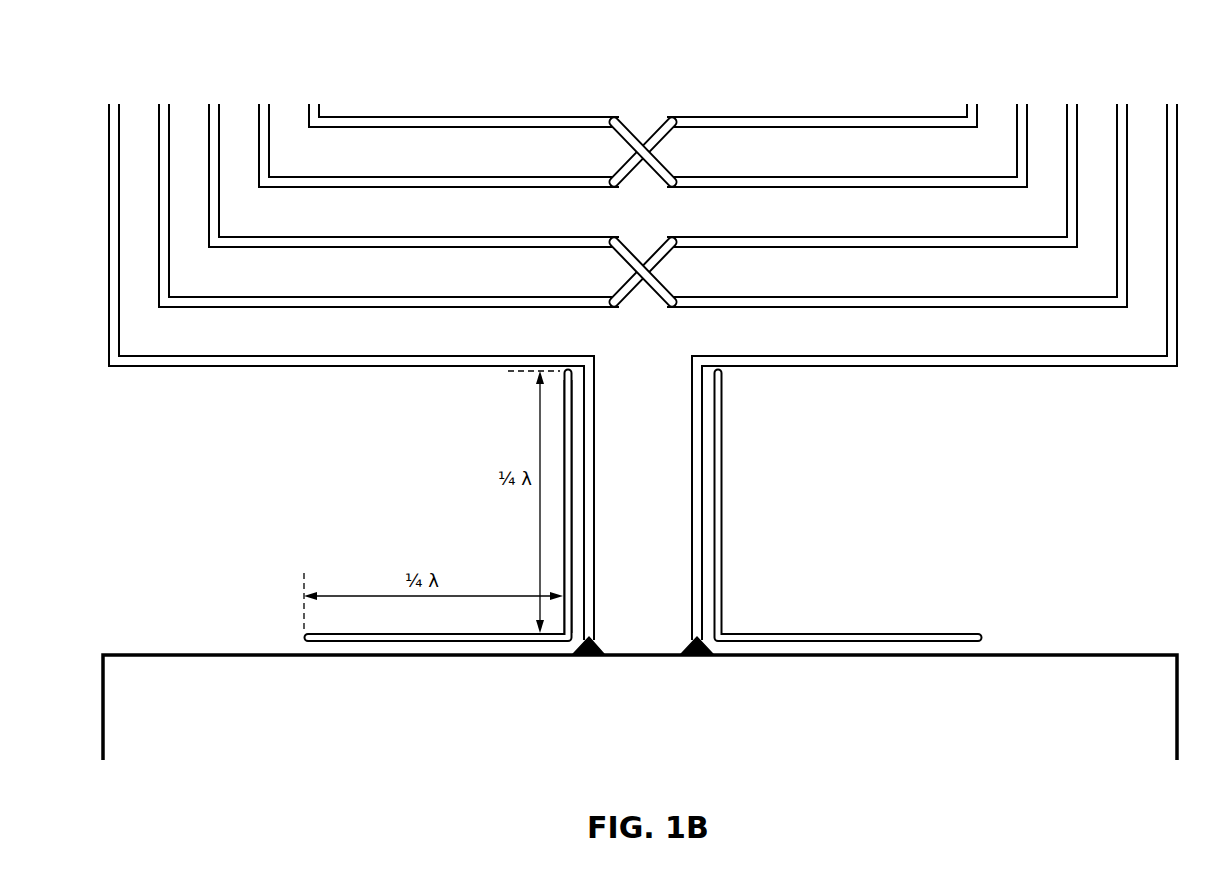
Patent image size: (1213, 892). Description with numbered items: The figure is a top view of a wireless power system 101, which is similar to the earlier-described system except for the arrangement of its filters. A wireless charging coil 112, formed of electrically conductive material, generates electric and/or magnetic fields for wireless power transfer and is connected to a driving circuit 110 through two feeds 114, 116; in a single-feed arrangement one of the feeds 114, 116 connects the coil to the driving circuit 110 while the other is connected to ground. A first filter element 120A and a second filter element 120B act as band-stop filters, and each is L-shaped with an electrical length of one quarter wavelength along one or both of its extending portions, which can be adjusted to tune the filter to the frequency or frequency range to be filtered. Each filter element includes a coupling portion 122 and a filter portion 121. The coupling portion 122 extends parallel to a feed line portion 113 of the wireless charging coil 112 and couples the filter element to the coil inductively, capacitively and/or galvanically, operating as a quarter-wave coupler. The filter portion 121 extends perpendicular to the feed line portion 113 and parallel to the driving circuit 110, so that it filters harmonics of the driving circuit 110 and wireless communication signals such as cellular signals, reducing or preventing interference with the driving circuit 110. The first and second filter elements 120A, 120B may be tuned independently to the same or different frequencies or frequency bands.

The wireless power system 101 is at (663, 340).
The driving circuit 110 is at (1108, 655).
The wireless charging coil 112 is at (1042, 366).
The feed line portion 113 is at (592, 530).
The feed 114 is at (582, 676).
The feed 116 is at (696, 676).
The first filter element 120A is at (482, 542).
The second filter element 120B is at (822, 519).
The filter portion 121 is at (348, 641).
The coupling portion 122 is at (572, 438).